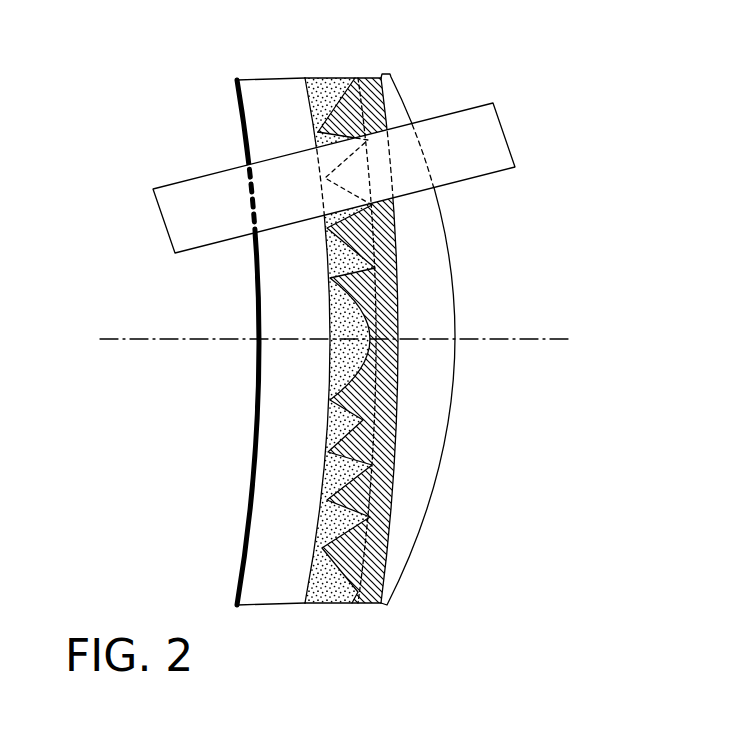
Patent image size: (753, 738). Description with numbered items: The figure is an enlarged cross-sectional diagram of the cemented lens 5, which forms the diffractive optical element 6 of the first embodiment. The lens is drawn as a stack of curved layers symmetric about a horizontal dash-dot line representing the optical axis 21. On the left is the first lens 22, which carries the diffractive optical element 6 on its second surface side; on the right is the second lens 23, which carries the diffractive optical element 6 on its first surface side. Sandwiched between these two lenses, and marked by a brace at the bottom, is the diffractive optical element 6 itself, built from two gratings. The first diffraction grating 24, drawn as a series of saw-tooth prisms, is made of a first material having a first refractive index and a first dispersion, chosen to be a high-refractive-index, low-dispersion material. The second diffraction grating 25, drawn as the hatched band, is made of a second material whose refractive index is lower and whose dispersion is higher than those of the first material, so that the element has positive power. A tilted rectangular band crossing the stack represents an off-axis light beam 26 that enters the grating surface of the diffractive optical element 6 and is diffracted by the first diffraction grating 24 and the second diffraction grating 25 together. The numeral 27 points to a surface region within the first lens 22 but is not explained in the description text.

The cemented lens 5 is at (572, 100).
The diffractive optical element 6 is at (334, 383).
The optical axis 21 is at (153, 341).
The first lens 22 is at (224, 315).
The second lens 23 is at (428, 240).
The first diffraction grating 24 is at (348, 472).
The second diffraction grating 25 is at (390, 497).
The off-axis light beam 26 is at (195, 177).
The substrate surface 27 is at (288, 385).